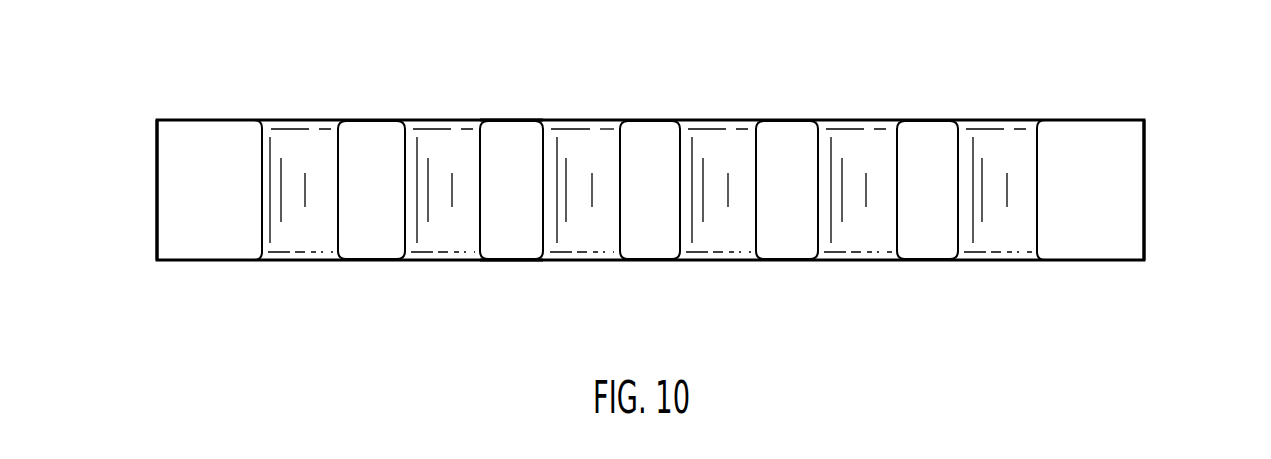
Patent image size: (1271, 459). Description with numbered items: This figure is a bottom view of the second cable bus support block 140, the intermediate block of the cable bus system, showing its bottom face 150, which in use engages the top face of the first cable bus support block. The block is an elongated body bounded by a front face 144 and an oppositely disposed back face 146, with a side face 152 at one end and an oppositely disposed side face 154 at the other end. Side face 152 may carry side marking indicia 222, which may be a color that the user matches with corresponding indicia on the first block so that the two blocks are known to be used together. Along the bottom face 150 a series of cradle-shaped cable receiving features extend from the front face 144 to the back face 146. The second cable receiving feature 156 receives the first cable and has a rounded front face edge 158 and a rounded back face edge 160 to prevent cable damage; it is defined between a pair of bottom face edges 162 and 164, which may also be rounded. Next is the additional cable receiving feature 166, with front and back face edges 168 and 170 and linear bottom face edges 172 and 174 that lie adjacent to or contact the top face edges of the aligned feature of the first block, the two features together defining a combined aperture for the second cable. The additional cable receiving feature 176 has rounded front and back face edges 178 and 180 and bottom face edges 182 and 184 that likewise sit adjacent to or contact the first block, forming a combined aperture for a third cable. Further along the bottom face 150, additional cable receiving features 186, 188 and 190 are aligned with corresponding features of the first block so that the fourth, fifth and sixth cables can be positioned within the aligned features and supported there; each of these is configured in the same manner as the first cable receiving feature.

The second cable bus support block 140 is at (1130, 148).
The front face 144 is at (510, 110).
The back face 146 is at (503, 272).
The bottom face 150 is at (940, 192).
The side face 152 is at (143, 174).
The side face 154 is at (1158, 197).
The second cable receiving feature 156 is at (289, 225).
The front face edge 158 is at (307, 118).
The back face edge 160 is at (313, 262).
The bottom face edge 162 is at (262, 213).
The bottom face edge 164 is at (338, 192).
The additional cable receiving feature 166 is at (420, 228).
The front face edge 168 is at (437, 118).
The back face edge 170 is at (443, 260).
The linear bottom face edge 172 is at (400, 207).
The linear bottom face edge 174 is at (480, 215).
The additional cable receiving feature 176 is at (581, 128).
The front face edge 178 is at (572, 118).
The back face edge 180 is at (577, 260).
The bottom face edge 182 is at (543, 160).
The bottom face edge 184 is at (622, 195).
The additional cable receiving feature 186 is at (712, 228).
The additional cable receiving feature 188 is at (853, 242).
The additional cable receiving feature 190 is at (985, 242).
The side marking indicia 222 is at (143, 233).